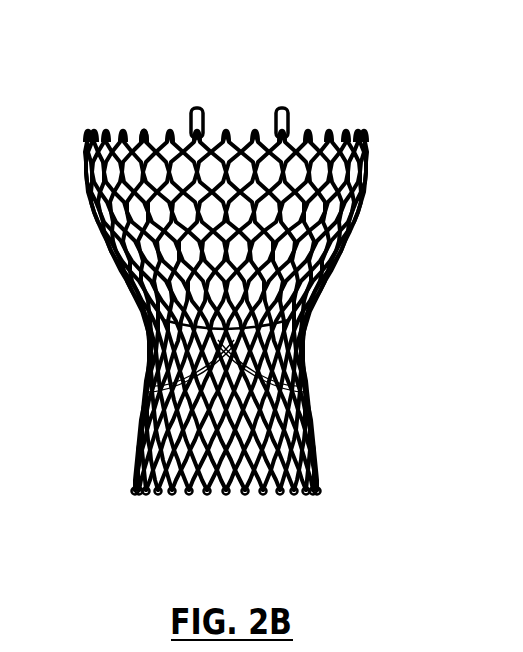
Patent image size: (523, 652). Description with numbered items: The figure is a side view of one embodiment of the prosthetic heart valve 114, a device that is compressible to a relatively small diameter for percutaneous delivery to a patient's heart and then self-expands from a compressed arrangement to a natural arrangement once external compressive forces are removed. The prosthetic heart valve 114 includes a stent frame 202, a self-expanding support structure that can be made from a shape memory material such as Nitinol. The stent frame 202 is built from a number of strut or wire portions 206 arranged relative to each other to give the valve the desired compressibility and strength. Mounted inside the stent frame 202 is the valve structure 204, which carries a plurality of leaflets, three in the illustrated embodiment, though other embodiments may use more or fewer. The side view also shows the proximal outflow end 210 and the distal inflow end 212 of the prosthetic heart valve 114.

The prosthetic heart valve 114 is at (70, 149).
The stent frame 202 is at (366, 136).
The valve structure 204 is at (274, 416).
The strut or wire portions 206 is at (246, 132).
The proximal outflow end 210 is at (146, 119).
The distal inflow end 212 is at (158, 501).